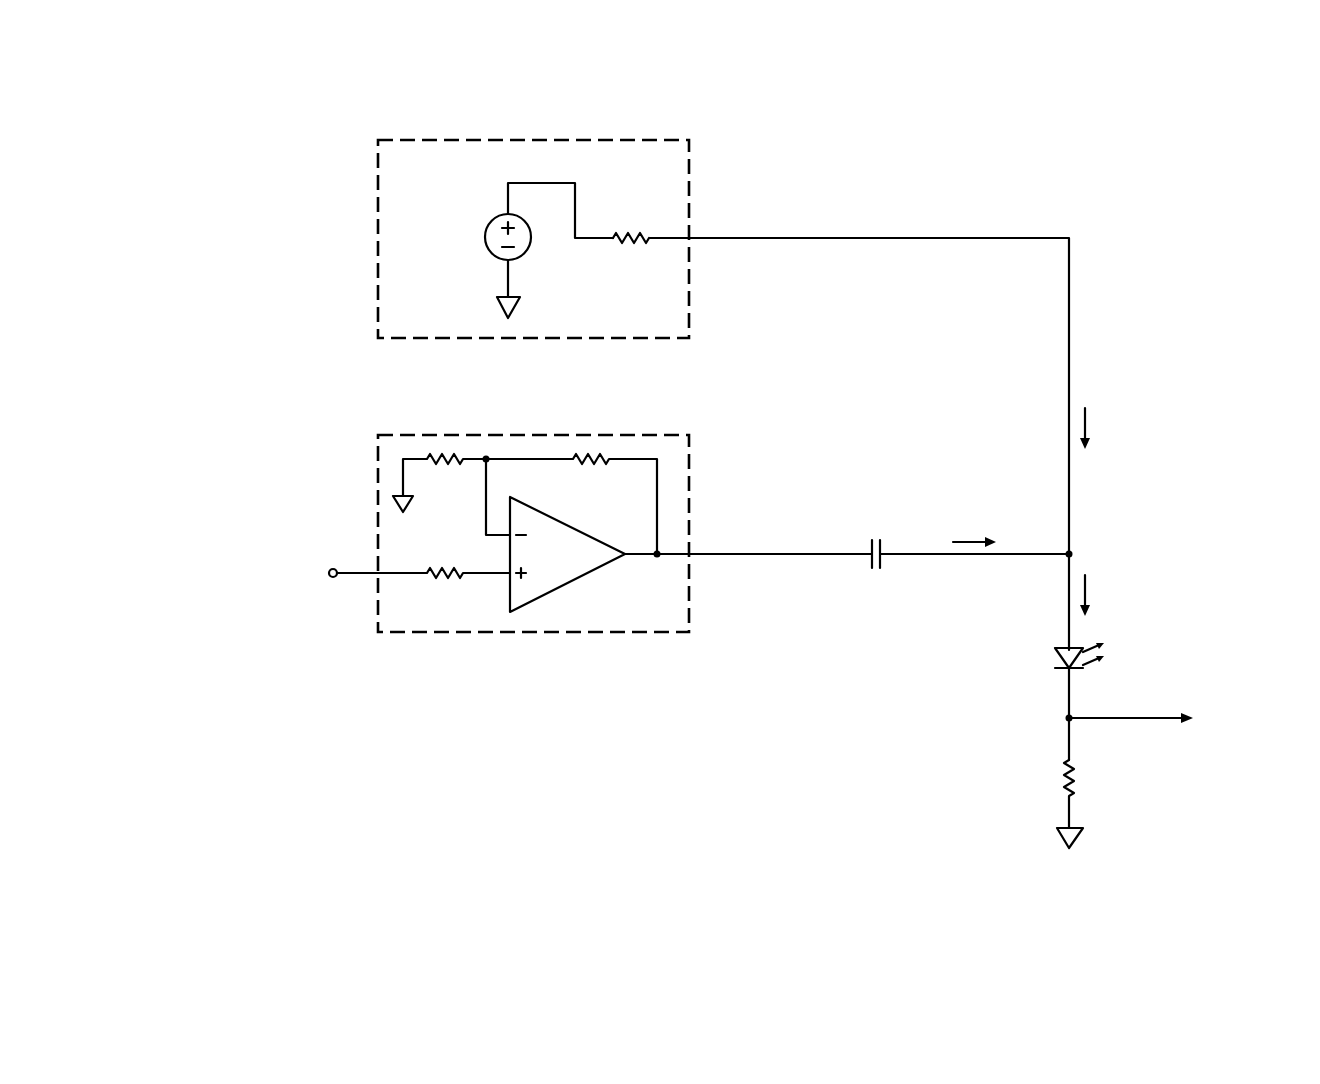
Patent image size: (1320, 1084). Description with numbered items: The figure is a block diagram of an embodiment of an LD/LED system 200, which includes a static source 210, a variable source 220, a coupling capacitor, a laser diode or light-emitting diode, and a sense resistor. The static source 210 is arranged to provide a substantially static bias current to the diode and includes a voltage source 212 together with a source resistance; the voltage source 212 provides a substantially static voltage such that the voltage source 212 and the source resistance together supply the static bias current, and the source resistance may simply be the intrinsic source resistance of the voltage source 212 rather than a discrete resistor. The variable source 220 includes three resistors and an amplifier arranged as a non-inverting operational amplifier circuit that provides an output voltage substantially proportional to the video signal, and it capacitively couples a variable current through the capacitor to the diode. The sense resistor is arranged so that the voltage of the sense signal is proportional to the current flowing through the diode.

The LD/LED system 200 is at (1190, 159).
The static source 210 is at (430, 140).
The voltage source 212 is at (527, 253).
The variable source 220 is at (430, 433).